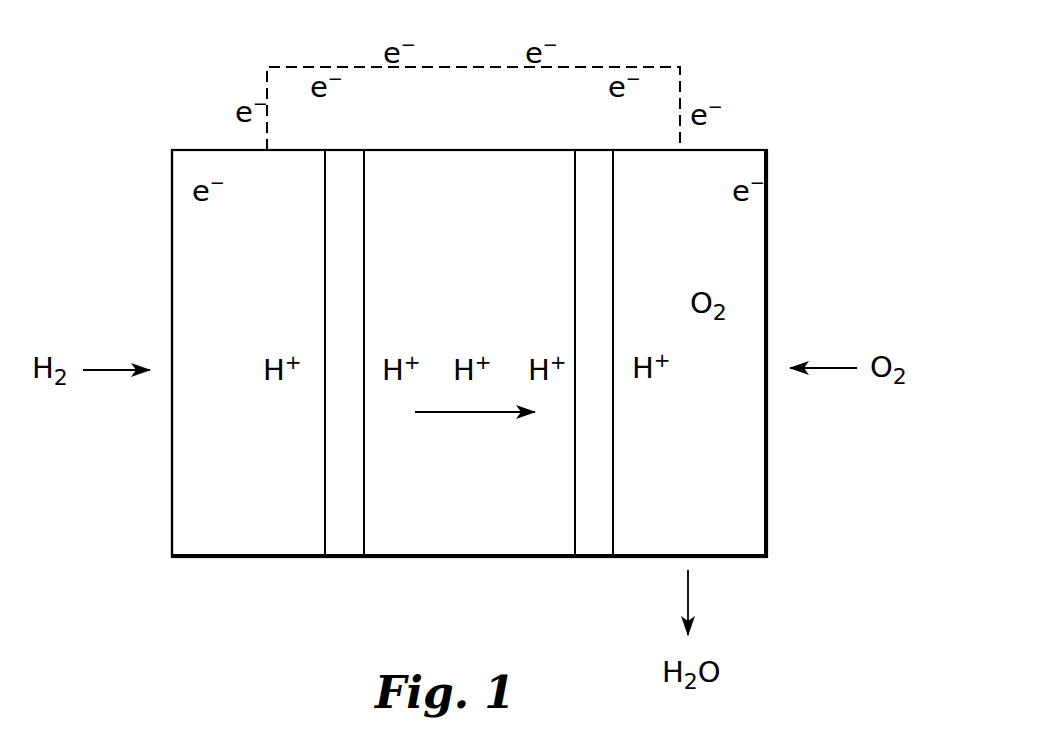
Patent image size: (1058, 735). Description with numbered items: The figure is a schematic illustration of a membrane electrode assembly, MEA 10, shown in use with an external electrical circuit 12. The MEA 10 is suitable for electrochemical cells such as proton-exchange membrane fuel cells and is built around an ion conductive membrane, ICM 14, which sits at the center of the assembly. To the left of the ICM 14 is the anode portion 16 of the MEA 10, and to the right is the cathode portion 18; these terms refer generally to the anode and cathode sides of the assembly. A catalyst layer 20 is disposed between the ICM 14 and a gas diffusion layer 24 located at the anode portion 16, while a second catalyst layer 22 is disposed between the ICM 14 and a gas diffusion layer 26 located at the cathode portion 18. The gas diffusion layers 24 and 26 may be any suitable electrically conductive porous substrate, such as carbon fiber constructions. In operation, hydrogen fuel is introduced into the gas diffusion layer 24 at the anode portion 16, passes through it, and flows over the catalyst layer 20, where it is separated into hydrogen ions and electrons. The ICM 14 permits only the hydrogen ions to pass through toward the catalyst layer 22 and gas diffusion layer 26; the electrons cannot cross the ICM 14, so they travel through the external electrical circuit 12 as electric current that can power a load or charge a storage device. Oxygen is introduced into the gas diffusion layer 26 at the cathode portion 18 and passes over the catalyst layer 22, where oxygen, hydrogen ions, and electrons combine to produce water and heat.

The MEA 10 is at (163, 141).
The external electrical circuit 12 is at (665, 50).
The ICM 14 is at (487, 540).
The anode portion 16 is at (145, 480).
The cathode portion 18 is at (799, 480).
The catalyst layer 20 is at (352, 243).
The catalyst layer 22 is at (590, 243).
The gas diffusion layer 24 is at (250, 540).
The gas diffusion layer 26 is at (709, 540).